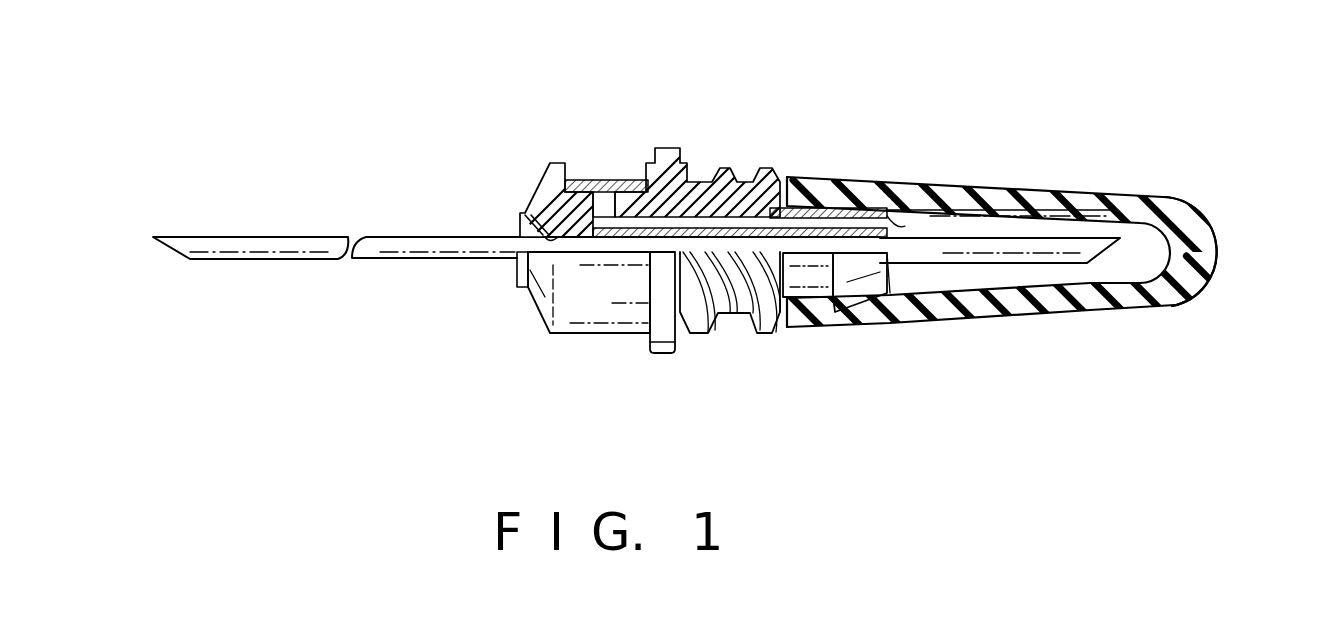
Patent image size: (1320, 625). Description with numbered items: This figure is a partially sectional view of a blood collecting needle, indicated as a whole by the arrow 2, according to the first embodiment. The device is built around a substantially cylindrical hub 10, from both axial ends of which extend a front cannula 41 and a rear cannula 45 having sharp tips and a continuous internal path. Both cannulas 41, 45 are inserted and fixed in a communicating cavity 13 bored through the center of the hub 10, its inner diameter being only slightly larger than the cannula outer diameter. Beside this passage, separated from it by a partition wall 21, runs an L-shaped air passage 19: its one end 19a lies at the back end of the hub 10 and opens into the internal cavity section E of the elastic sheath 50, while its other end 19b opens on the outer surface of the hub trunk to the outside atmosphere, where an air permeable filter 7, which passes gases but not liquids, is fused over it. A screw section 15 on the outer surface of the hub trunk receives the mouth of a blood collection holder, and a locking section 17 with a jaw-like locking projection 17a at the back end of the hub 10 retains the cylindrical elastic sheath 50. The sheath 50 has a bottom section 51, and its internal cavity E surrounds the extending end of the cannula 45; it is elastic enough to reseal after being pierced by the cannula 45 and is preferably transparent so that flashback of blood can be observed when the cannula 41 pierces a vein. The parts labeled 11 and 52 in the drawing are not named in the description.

The needle assembly 2 is at (896, 60).
The cannula 41 is at (228, 246).
The communicating cavity 13 is at (534, 214).
The air permeable filter 7 is at (591, 180).
The other end of the air passage 19b is at (612, 195).
The air passage 19 is at (730, 224).
The partition wall 21 is at (774, 230).
The hub body 11 is at (562, 310).
The hub 10 is at (608, 336).
The screw section 15 is at (720, 330).
The locking section 17 is at (856, 206).
The locking projection 17a is at (835, 207).
The cap opening 52 is at (797, 177).
The elastic sheath 50 is at (1152, 197).
The bottom section 51 is at (1206, 222).
The end of the air passage 19a is at (908, 220).
The internal cavity section E is at (1008, 231).
The cannula 45 is at (1077, 254).